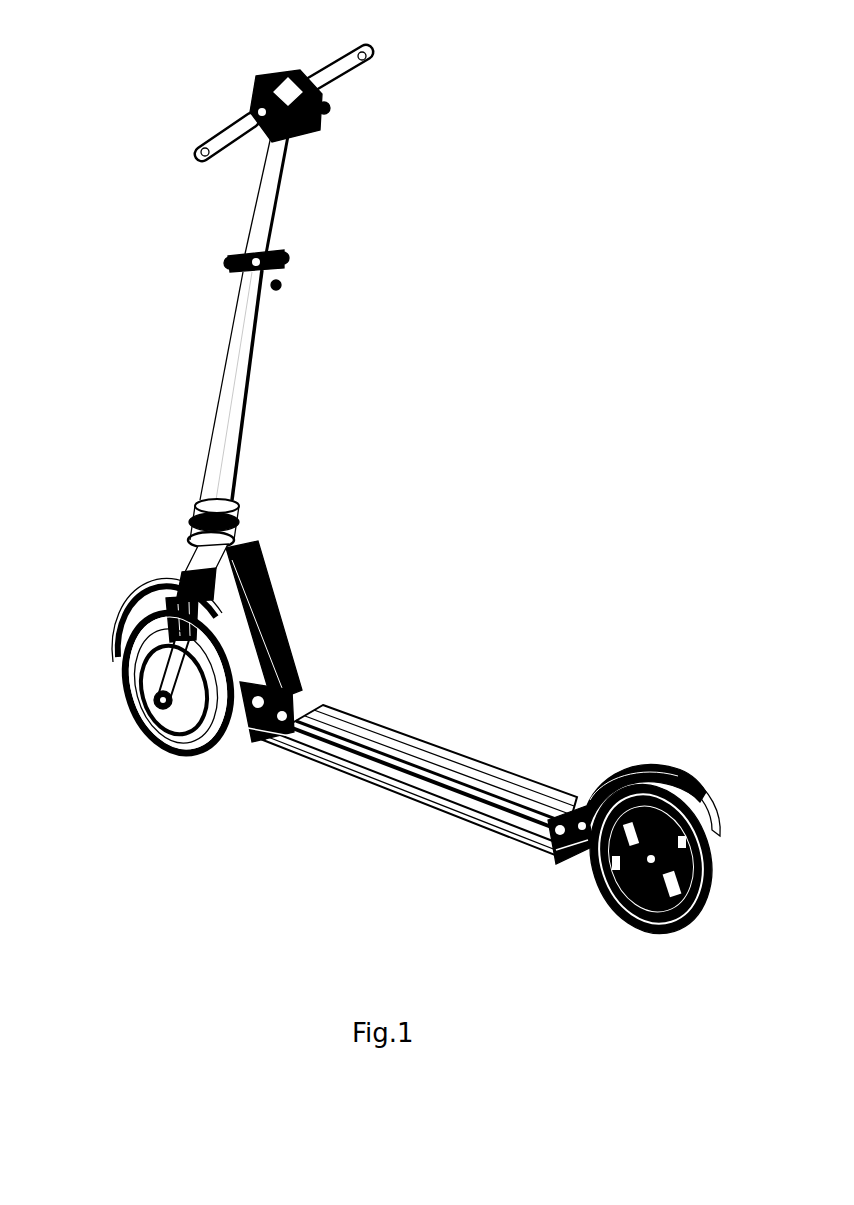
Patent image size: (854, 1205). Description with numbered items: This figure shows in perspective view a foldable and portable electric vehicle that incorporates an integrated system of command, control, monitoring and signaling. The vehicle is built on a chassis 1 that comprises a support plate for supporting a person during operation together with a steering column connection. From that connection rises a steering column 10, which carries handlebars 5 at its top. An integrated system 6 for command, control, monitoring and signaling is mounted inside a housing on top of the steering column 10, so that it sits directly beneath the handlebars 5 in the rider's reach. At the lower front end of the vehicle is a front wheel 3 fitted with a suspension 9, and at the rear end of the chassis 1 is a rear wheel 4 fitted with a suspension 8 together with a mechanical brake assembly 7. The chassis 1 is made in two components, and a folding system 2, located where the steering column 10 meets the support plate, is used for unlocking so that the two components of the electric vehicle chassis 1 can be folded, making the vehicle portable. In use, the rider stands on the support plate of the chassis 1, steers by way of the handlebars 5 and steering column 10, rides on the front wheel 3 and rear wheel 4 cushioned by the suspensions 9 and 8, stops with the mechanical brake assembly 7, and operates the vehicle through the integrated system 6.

The chassis 1 is at (321, 660).
The folding system 2 is at (239, 769).
The front wheel 3 is at (155, 690).
The rear wheel 4 is at (631, 873).
The handlebars 5 is at (240, 104).
The integrated system for command, control, monitoring and signaling 6 is at (272, 356).
The mechanical brake assembly 7 is at (622, 744).
The suspension 8 is at (509, 876).
The suspension 9 is at (130, 603).
The steering column 10 is at (318, 318).